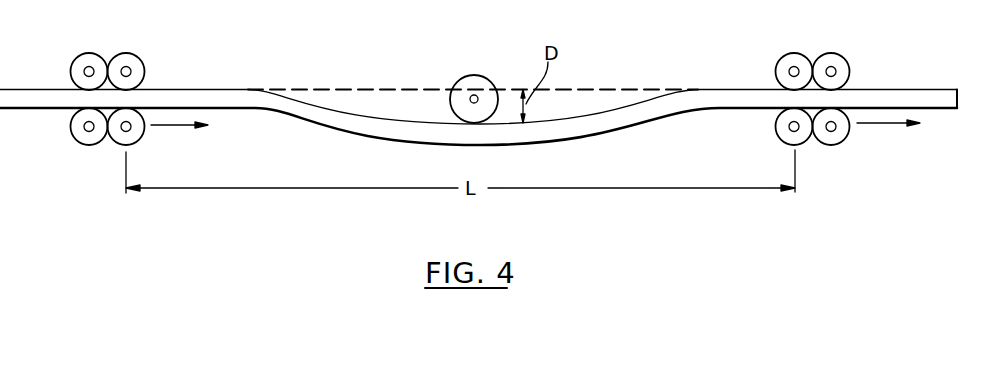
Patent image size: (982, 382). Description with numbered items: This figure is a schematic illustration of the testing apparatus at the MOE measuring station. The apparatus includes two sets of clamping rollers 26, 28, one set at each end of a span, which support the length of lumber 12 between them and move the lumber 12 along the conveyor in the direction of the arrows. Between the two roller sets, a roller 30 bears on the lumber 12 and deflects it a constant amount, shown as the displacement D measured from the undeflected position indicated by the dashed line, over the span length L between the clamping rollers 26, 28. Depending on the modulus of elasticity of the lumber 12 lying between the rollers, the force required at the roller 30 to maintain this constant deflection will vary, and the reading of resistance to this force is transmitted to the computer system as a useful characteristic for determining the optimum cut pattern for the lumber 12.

The lumber 12 is at (898, 92).
The set of clamping rollers 26 is at (140, 57).
The set of clamping rollers 28 is at (780, 58).
The roller 30 is at (467, 76).